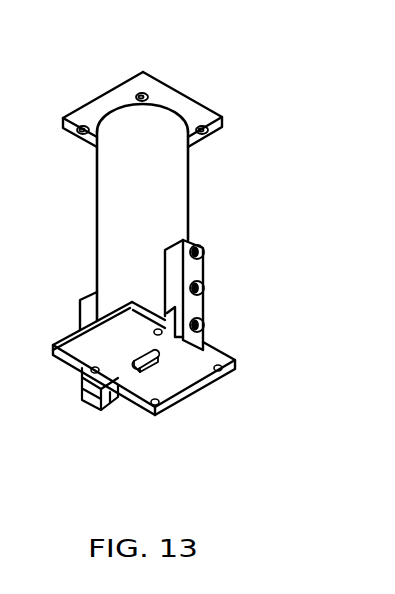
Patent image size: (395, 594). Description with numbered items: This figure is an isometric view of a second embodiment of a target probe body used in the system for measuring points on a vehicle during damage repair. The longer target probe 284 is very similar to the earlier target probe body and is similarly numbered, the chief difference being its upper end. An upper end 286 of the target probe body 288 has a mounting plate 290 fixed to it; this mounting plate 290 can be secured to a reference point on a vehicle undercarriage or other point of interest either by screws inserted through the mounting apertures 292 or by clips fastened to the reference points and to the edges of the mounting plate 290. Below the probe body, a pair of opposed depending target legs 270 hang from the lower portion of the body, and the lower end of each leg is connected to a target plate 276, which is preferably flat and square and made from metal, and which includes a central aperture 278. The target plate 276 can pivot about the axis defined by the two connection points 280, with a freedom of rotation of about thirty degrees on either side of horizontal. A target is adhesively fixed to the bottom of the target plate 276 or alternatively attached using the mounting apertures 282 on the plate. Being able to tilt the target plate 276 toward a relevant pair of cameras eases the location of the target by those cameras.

The target legs 270 is at (82, 313).
The target plate 276 is at (233, 360).
The central aperture 278 is at (137, 372).
The connection points 280 is at (203, 325).
The mounting apertures 282 is at (80, 366).
The longer target probe 284 is at (188, 192).
The upper end 286 is at (153, 133).
The target probe body 288 is at (183, 218).
The mounting plate 290 is at (93, 99).
The mounting apertures 292 is at (148, 92).